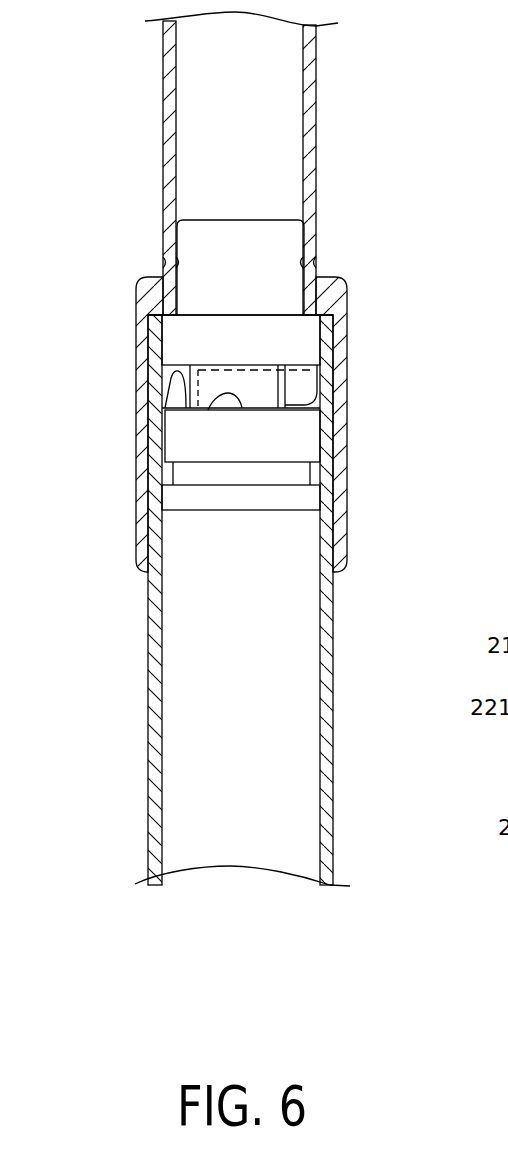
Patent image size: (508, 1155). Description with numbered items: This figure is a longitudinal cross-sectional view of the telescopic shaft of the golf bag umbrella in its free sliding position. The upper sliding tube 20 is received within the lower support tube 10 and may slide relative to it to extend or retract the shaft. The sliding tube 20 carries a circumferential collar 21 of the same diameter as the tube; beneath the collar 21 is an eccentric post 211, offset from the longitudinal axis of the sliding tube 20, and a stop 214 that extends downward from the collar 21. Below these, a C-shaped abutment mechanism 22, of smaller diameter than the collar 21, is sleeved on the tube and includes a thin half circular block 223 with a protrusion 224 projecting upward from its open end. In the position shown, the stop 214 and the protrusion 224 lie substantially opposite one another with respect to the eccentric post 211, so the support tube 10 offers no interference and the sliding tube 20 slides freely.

The support tube 10 is at (334, 661).
The sliding tube 20 is at (316, 91).
The collar 21 is at (347, 322).
The C-shaped abutment mechanism 22 is at (310, 447).
The eccentric post 211 is at (265, 392).
The stop 214 is at (313, 372).
The thin half circular block 223 is at (217, 410).
The protrusion 224 is at (173, 395).